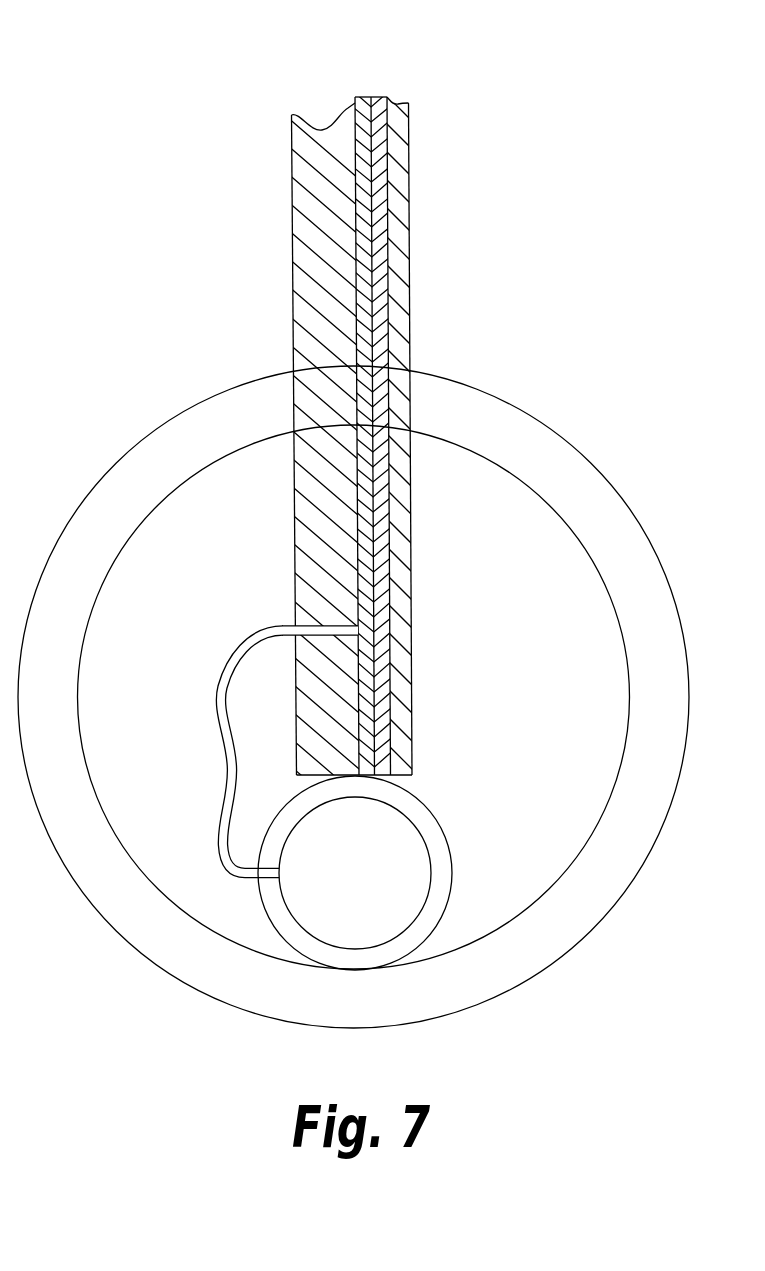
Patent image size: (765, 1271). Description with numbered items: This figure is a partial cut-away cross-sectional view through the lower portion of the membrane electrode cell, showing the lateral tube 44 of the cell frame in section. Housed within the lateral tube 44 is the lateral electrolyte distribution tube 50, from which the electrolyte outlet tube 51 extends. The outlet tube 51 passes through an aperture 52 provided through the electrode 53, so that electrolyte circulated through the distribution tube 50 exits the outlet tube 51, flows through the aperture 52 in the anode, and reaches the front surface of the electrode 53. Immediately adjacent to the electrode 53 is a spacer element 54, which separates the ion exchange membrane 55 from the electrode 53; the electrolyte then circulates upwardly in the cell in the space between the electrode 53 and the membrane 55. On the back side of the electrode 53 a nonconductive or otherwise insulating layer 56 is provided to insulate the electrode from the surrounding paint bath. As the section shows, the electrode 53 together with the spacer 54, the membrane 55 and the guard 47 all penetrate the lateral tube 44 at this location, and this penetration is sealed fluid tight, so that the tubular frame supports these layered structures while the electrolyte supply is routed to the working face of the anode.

The lateral tube 44 is at (596, 468).
The guard 47 is at (337, 415).
The lateral electrolyte distribution tube 50 is at (433, 816).
The electrolyte outlet tube 51 is at (221, 802).
The aperture 52 is at (291, 617).
The electrode 53 is at (320, 127).
The spacer element 54 is at (365, 96).
The ion exchange membrane 55 is at (378, 96).
The insulating layer 56 is at (280, 430).